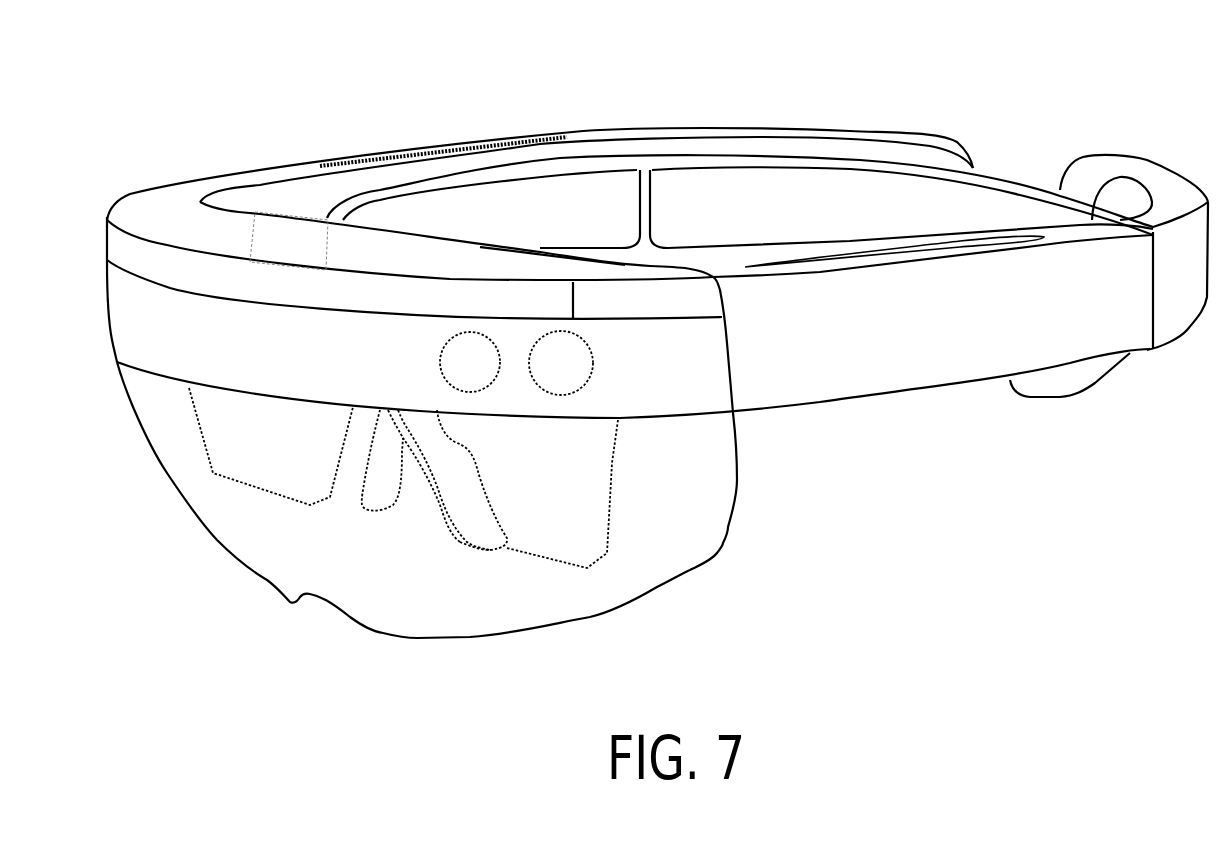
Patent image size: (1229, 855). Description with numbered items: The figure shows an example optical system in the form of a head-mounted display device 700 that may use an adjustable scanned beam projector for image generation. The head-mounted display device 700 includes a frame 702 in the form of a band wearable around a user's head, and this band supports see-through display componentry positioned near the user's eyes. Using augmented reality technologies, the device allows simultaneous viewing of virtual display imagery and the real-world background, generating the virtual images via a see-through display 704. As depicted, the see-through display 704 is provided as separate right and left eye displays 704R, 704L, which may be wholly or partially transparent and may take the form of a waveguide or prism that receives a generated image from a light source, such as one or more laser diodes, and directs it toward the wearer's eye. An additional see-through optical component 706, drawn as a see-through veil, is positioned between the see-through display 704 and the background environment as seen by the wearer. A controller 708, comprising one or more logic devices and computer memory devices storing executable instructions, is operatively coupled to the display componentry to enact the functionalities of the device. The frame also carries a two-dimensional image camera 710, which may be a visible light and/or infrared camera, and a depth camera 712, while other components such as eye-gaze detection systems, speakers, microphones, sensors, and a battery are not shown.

The head-mounted display device 700 is at (1107, 72).
The frame 702 is at (987, 334).
The see-through display 704 is at (439, 478).
The right eye display 704R is at (317, 482).
The left eye display 704L is at (583, 554).
The see-through optical component 706 is at (725, 538).
The controller 708 is at (304, 251).
The two-dimensional image camera 710 is at (487, 377).
The depth camera 712 is at (577, 377).